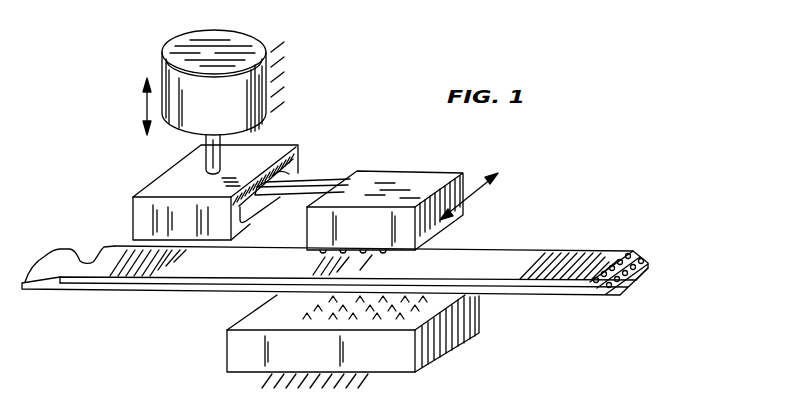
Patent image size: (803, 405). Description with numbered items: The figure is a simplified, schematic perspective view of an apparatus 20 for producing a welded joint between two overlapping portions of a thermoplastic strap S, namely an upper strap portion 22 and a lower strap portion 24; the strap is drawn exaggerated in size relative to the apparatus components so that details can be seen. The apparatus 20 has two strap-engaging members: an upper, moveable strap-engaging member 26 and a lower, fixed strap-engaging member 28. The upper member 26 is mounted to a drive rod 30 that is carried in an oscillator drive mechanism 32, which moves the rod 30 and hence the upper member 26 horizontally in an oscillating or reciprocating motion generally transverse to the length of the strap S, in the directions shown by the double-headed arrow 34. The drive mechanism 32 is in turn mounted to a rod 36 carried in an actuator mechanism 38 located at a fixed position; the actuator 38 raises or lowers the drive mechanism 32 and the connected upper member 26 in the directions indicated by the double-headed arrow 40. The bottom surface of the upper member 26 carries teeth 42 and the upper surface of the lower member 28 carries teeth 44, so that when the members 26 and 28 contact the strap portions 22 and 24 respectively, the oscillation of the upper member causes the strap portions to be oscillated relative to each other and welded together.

The apparatus 20 is at (95, 158).
The upper strap portion 22 is at (518, 257).
The lower strap portion 24 is at (630, 277).
The upper strap-engaging member 26 is at (413, 175).
The lower strap-engaging member 28 is at (466, 333).
The drive rod 30 is at (313, 182).
The drive mechanism 32 is at (133, 215).
The double-headed arrow 34 is at (478, 198).
The rod 36 is at (242, 152).
The actuator mechanism 38 is at (170, 77).
The double-headed arrow 40 is at (142, 108).
The teeth 42 is at (407, 253).
The teeth 44 is at (302, 313).
The strap S is at (585, 251).